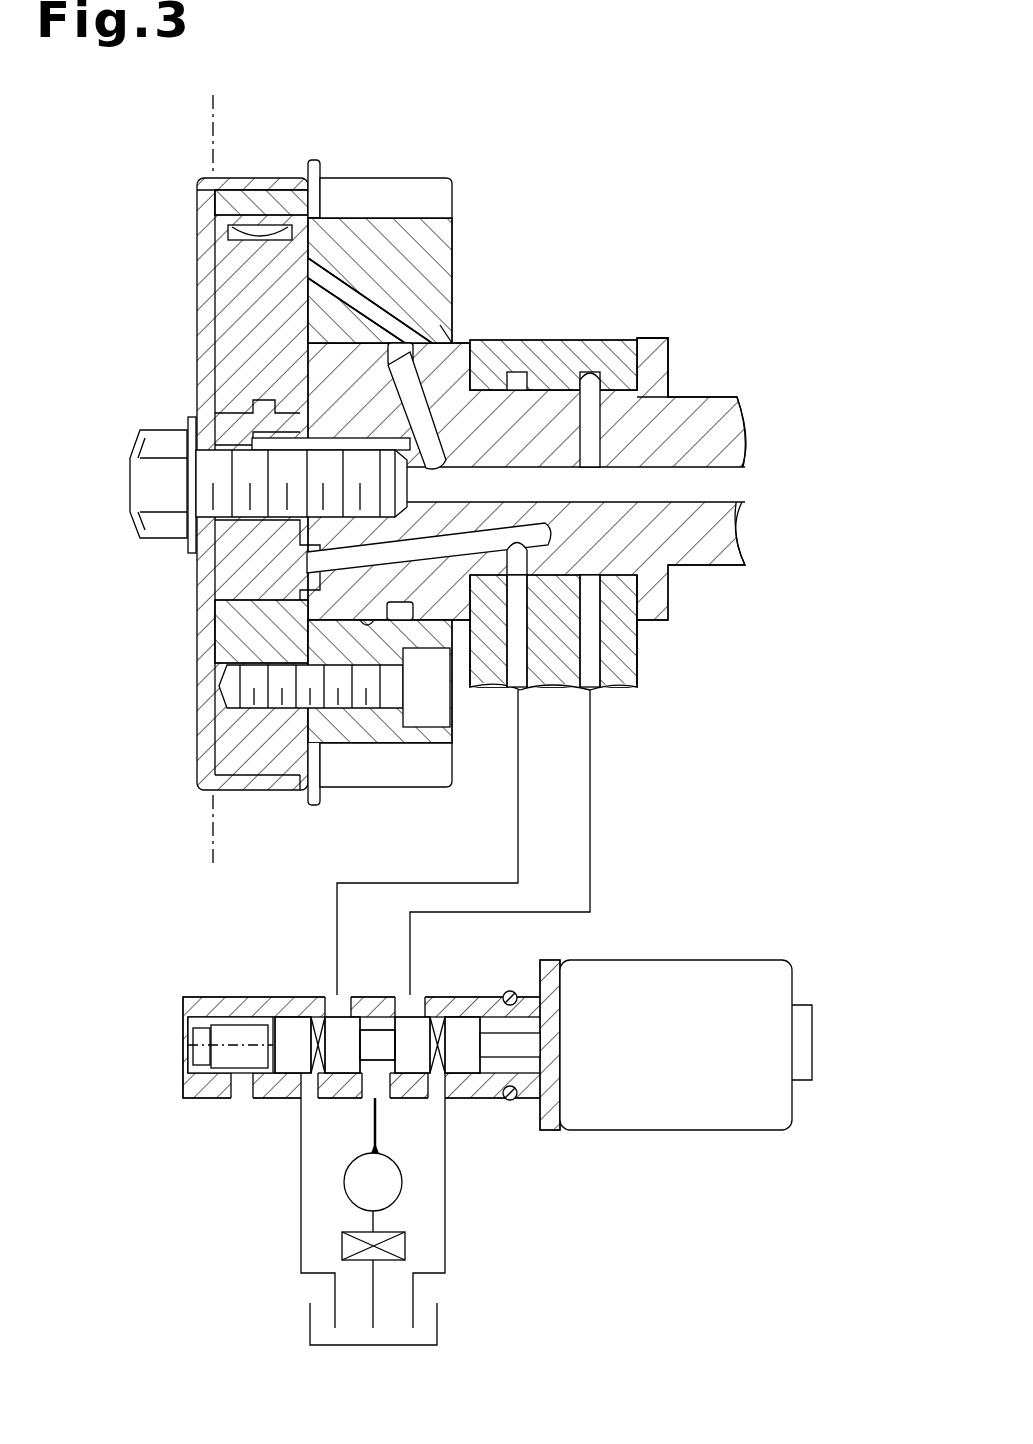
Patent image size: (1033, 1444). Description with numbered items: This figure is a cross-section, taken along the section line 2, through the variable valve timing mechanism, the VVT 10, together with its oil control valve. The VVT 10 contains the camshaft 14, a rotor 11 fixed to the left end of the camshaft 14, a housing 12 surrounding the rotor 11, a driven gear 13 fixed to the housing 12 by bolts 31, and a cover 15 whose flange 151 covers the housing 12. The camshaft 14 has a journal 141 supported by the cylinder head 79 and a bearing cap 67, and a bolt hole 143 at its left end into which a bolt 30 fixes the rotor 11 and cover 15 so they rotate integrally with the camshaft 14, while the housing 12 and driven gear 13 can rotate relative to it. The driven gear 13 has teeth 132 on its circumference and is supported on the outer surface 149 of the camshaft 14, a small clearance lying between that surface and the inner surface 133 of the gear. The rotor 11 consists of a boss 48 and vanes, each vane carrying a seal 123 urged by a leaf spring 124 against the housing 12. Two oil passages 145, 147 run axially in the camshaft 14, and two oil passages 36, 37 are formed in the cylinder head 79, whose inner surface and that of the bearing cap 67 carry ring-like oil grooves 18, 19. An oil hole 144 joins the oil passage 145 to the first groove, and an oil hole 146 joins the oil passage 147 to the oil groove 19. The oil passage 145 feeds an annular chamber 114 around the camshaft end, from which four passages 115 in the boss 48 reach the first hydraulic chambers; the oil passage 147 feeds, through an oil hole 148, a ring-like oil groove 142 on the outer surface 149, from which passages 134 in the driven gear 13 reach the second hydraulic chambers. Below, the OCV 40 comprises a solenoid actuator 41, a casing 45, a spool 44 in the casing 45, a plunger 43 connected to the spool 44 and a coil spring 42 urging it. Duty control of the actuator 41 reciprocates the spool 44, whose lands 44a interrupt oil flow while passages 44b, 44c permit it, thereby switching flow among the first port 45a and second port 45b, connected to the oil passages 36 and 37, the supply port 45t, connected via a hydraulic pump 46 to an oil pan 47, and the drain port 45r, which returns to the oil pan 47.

The section line 2 is at (208, 108).
The VVT 10 is at (552, 190).
The rotor 11 is at (200, 326).
The housing 12 is at (270, 770).
The driven gear 13 is at (455, 250).
The camshaft 14 is at (738, 430).
The cover 15 is at (200, 290).
The oil groove 18 is at (530, 345).
The oil groove 19 is at (592, 375).
The bolt 30 is at (138, 460).
The bolts 31 is at (440, 690).
The oil passage 36 is at (525, 690).
The oil passage 37 is at (595, 690).
The OCV 40 is at (680, 927).
The solenoid actuator 41 is at (690, 1060).
The coil spring 42 is at (230, 1040).
The plunger 43 is at (548, 1110).
The spool 44 is at (285, 1040).
The lands 44a is at (345, 1025).
The passage 44b is at (385, 1030).
The passage 44c is at (300, 1040).
The casing 45 is at (478, 985).
The first port 45a is at (330, 1000).
The second port 45b is at (420, 1000).
The drain port 45r is at (295, 1105).
The supply port 45t is at (370, 1105).
The hydraulic pump 46 is at (392, 1158).
The oil pan 47 is at (437, 1320).
The boss 48 is at (210, 590).
The bearing cap 67 is at (630, 340).
The cylinder head 79 is at (635, 645).
The annular chamber 114 is at (270, 390).
The passages 115 is at (290, 602).
The seal 123 is at (222, 220).
The leaf spring 124 is at (232, 238).
The teeth 132 is at (425, 185).
The inner surface 133 is at (440, 335).
The passages 134 is at (350, 300).
The journal 141 is at (558, 385).
The oil groove 142 is at (412, 612).
The bolt hole 143 is at (325, 450).
The oil hole 144 is at (545, 565).
The oil passage 145 is at (452, 525).
The oil hole 146 is at (602, 430).
The oil passage 147 is at (515, 470).
The oil hole 148 is at (445, 345).
The outer surface 149 is at (365, 620).
The flange 151 is at (240, 180).